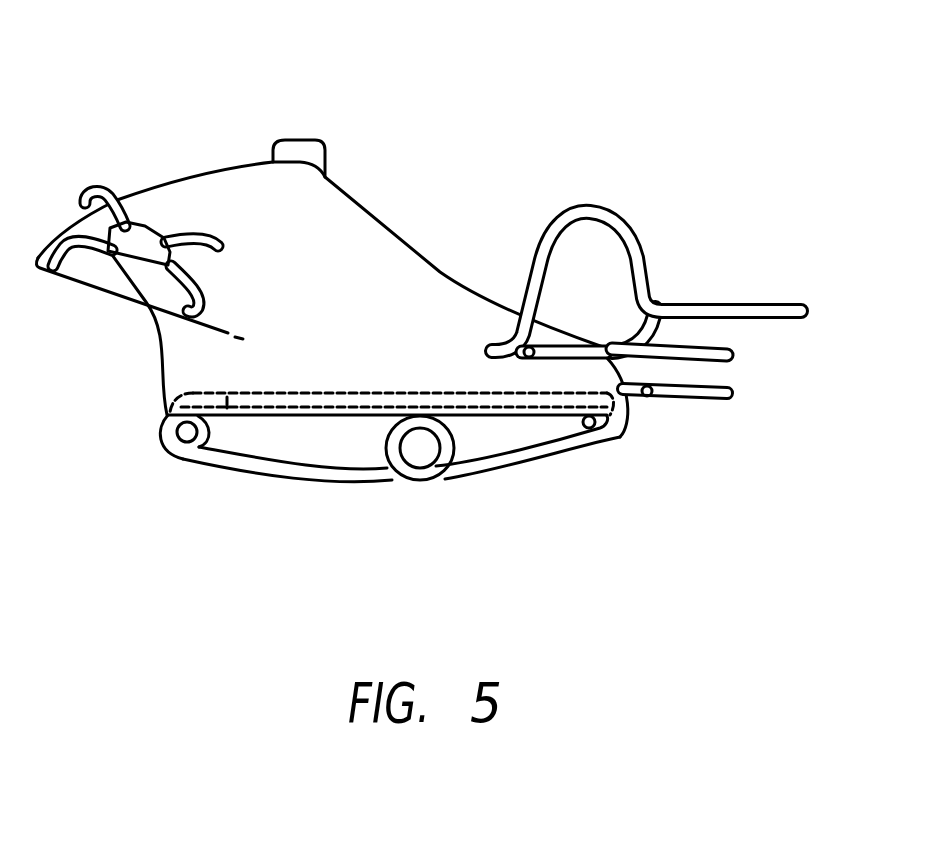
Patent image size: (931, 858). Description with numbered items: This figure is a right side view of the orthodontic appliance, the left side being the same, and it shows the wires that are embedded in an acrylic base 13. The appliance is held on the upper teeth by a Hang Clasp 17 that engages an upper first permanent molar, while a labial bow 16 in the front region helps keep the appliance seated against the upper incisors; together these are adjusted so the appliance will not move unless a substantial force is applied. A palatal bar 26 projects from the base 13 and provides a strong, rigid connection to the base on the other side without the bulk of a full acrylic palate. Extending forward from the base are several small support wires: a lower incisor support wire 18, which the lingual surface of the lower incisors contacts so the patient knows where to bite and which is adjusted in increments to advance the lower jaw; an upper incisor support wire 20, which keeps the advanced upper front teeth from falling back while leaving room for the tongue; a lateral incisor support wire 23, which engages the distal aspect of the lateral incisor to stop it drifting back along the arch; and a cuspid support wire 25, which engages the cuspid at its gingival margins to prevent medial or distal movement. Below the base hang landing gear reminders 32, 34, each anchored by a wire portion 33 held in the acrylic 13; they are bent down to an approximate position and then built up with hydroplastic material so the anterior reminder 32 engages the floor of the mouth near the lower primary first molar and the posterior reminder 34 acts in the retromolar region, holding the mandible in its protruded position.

The left base 13 is at (357, 227).
The labial bow 16 is at (643, 253).
The Hang Clasp 17 is at (142, 237).
The lower incisor support wire 18 is at (728, 397).
The upper incisor support wire 20 is at (728, 352).
The lateral incisor support wire 23 is at (657, 333).
The cuspid support wire 25 is at (568, 354).
The palatal bar 26 is at (305, 148).
The landing gear reminder 32 is at (540, 453).
The wire portion 33 is at (293, 395).
The landing gear reminder 34 is at (233, 457).